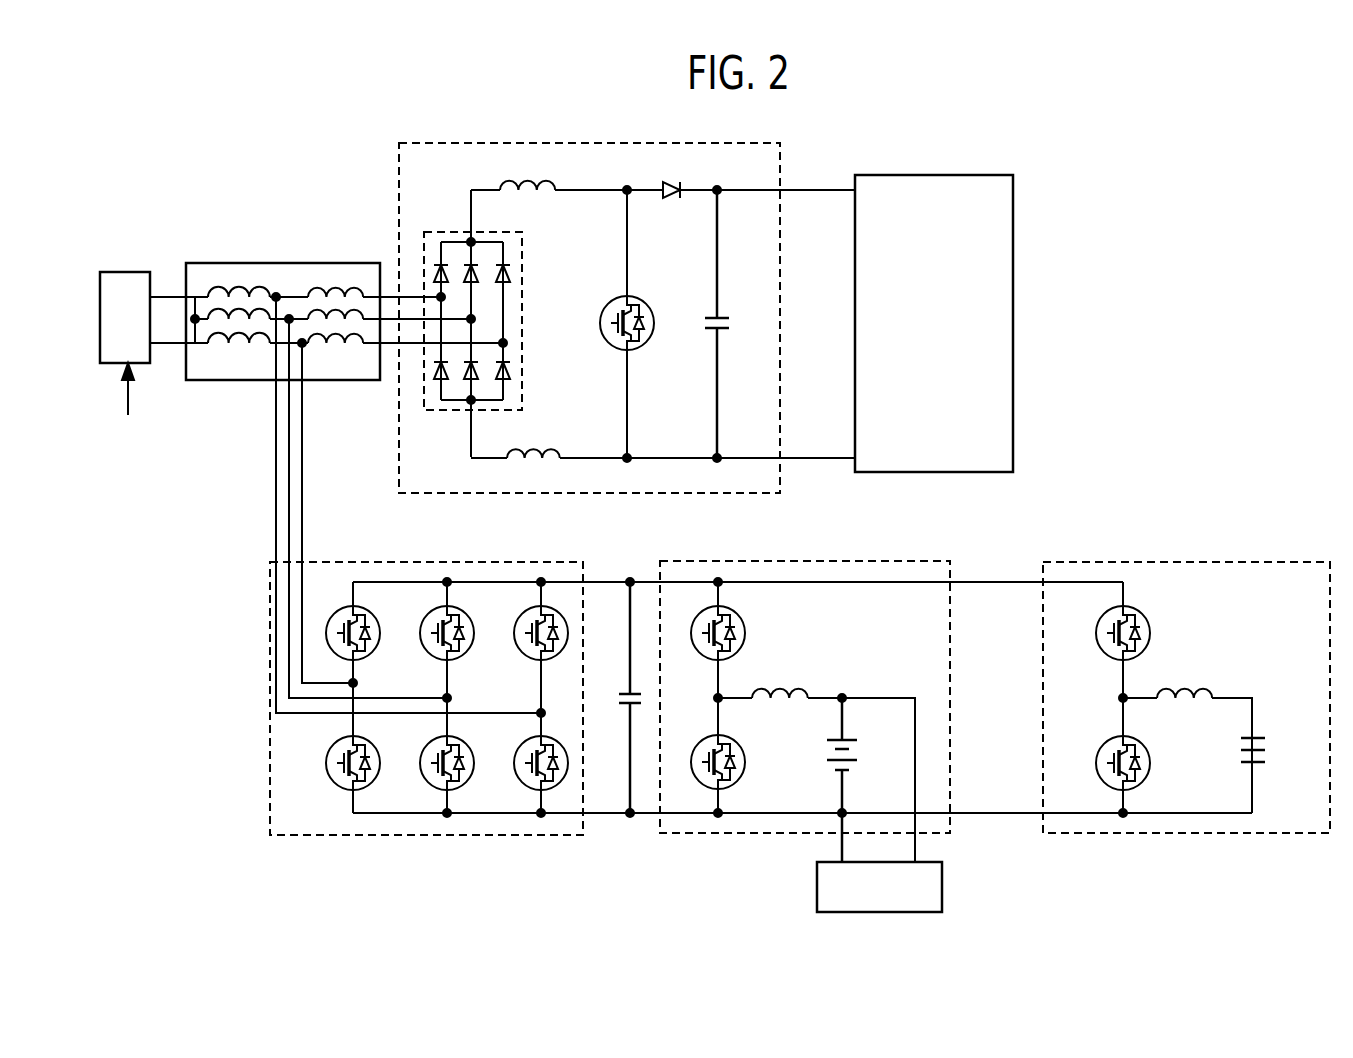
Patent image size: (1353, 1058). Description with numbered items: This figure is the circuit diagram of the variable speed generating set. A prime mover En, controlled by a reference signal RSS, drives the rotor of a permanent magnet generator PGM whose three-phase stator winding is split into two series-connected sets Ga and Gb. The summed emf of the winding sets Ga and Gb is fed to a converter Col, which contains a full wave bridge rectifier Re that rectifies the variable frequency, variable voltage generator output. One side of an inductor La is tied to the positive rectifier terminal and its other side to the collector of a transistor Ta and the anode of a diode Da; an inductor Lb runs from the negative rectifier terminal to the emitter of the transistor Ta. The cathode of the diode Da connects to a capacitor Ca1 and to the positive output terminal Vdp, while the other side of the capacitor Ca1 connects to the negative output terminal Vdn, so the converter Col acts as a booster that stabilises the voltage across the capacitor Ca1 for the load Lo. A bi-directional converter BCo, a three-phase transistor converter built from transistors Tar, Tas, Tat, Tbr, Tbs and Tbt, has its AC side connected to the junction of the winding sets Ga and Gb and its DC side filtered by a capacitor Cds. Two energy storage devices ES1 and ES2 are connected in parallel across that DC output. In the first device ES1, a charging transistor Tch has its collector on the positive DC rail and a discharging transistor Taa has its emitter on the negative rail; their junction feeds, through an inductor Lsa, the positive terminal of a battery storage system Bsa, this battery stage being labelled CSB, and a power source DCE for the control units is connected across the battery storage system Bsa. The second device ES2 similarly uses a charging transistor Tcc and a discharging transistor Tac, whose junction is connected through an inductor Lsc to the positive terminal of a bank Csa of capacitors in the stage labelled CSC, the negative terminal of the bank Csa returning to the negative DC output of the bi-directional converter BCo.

The prime mover En is at (147, 300).
The reference signal RSS is at (130, 406).
The permanent magnet generator PGM is at (363, 472).
The stator winding set Ga is at (239, 330).
The stator winding set Gb is at (335, 331).
The full wave bridge rectifier Re is at (473, 323).
The converter Col is at (627, 302).
The inductor La is at (527, 173).
The inductor Lb is at (533, 440).
The diode Da is at (676, 175).
The transistor Ta is at (613, 324).
The capacitor Ca1 is at (740, 324).
The positive output terminal Vdp is at (816, 171).
The negative output terminal Vdn is at (817, 441).
The load Lo is at (934, 309).
The bi-directional converter BCo is at (761, 684).
The upper-arm switching element, phase r Tar is at (344, 640).
The upper-arm switching element, phase s Tas is at (436, 640).
The upper-arm switching element, phase t Tat is at (531, 640).
The lower-arm switching element, phase r Tbr is at (339, 755).
The lower-arm switching element, phase s Tbs is at (433, 755).
The lower-arm switching element, phase t Tbt is at (527, 755).
The capacitor Cds is at (613, 697).
The energy storage device ES1 is at (805, 697).
The charging transistor Tch is at (704, 640).
The discharging transistor Taa is at (703, 755).
The inductor Lsa is at (780, 675).
The battery charge/discharge circuit CSB is at (776, 724).
The battery storage system Bsa is at (865, 780).
The power source DCE is at (906, 887).
The energy storage device ES2 is at (1186, 683).
The charging transistor Tcc is at (1108, 640).
The discharging transistor Tac is at (1108, 755).
The inductor Lsc is at (1184, 675).
The capacitor charge/discharge circuit CSC is at (1181, 724).
The bank of capacitors Csa is at (1274, 756).